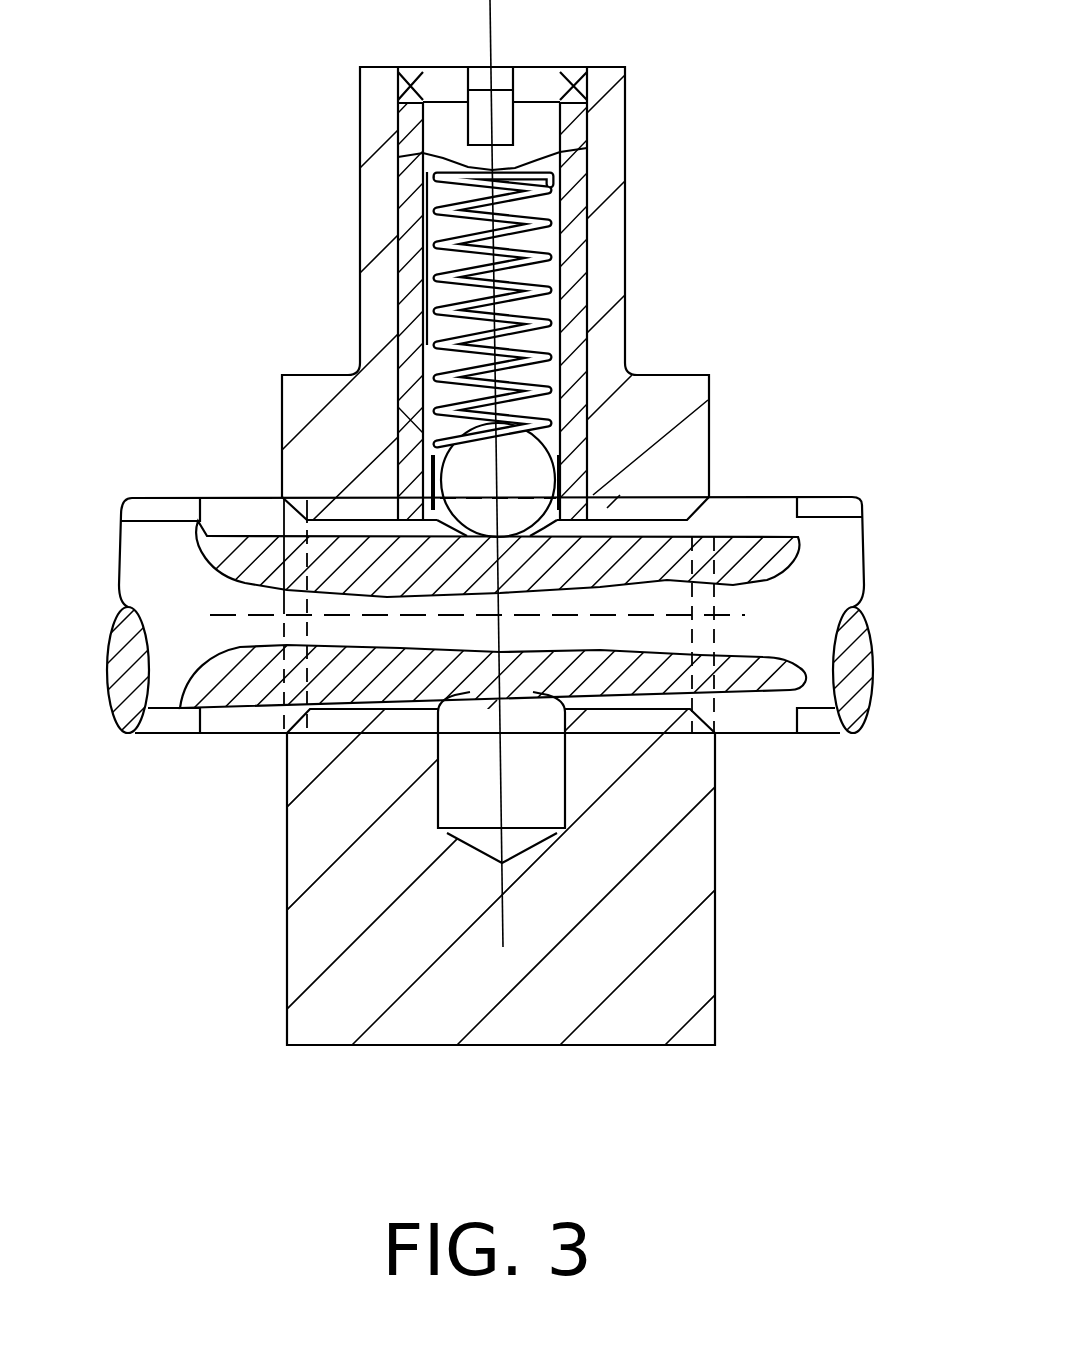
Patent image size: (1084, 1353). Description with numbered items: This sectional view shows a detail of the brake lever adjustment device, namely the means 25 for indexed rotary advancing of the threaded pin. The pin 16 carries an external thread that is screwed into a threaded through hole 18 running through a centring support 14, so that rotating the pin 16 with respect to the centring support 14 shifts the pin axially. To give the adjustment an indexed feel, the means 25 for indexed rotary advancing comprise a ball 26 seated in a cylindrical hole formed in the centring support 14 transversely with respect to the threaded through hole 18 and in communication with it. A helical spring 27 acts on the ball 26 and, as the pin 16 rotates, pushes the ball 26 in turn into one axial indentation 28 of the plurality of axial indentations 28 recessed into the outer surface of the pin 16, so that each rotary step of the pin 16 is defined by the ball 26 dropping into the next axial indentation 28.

The centring support 14 is at (690, 862).
The pin 16 is at (841, 505).
The threaded through hole 18 is at (658, 500).
The means for indexed rotary advancing 25 is at (423, 342).
The ball 26 is at (530, 467).
The helical spring 27 is at (590, 273).
The axial indentation 28 is at (233, 515).